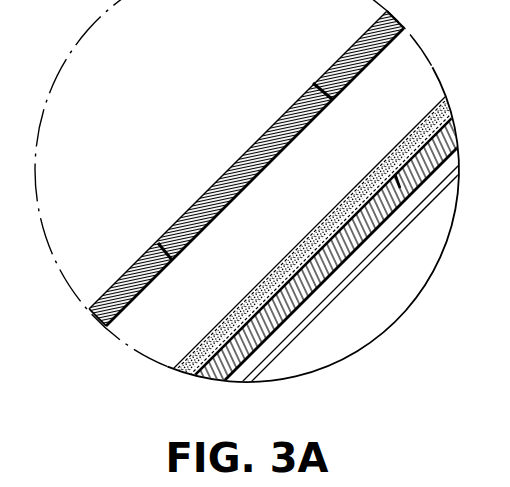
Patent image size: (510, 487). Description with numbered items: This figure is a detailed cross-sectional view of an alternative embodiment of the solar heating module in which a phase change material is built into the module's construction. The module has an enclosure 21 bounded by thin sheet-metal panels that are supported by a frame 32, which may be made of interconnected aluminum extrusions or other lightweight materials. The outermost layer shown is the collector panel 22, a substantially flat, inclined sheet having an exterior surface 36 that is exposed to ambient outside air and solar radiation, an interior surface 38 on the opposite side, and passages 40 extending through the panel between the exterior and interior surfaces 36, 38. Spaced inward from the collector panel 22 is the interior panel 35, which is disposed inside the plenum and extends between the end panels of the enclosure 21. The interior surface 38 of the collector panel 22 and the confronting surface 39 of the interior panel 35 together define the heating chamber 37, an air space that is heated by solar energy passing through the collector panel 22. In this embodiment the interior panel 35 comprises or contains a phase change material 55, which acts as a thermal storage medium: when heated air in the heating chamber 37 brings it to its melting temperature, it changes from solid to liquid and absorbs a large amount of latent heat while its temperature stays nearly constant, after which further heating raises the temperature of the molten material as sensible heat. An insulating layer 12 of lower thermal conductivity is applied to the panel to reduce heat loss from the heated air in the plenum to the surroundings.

The insulating layer 12 is at (331, 195).
The enclosure 21 is at (246, 168).
The collector panel 22 is at (367, 33).
The frame 32 is at (356, 311).
The interior panel 35 is at (430, 101).
The exterior surface 36 is at (244, 150).
The heating chamber 37 is at (306, 216).
The interior surface 38 is at (198, 238).
The surface 39 is at (206, 328).
The passages 40 is at (312, 86).
The phase change material 55 is at (347, 187).